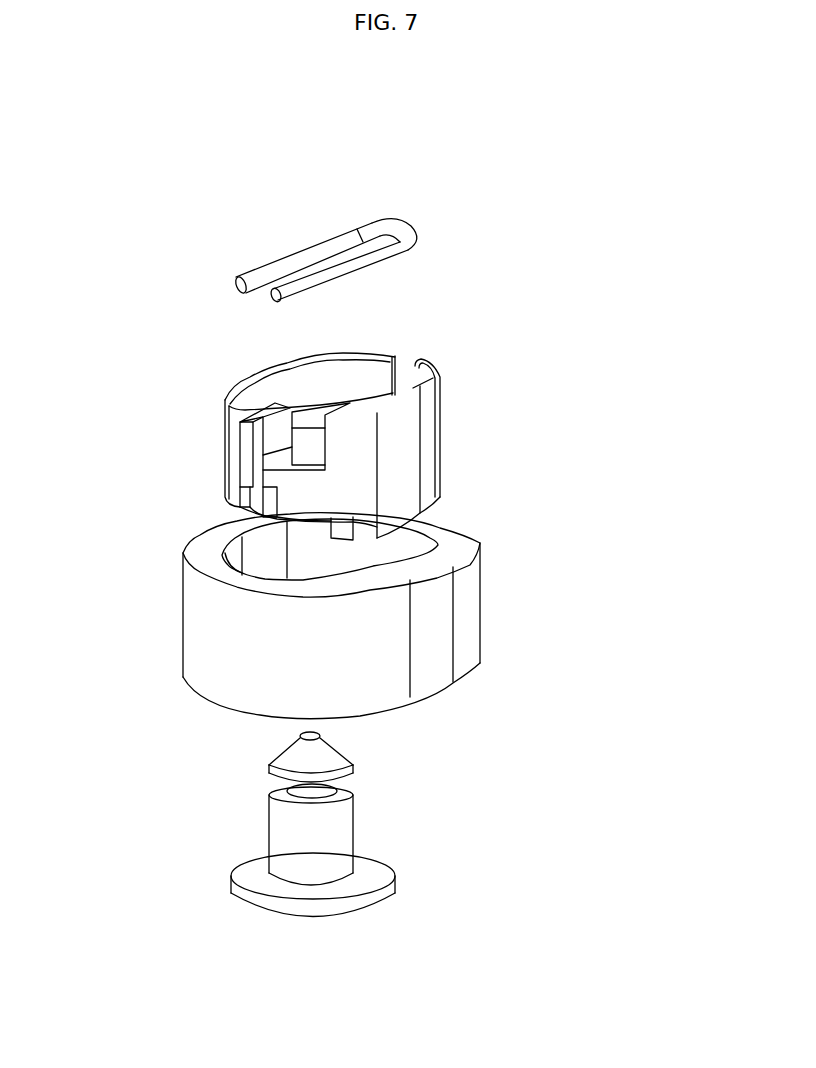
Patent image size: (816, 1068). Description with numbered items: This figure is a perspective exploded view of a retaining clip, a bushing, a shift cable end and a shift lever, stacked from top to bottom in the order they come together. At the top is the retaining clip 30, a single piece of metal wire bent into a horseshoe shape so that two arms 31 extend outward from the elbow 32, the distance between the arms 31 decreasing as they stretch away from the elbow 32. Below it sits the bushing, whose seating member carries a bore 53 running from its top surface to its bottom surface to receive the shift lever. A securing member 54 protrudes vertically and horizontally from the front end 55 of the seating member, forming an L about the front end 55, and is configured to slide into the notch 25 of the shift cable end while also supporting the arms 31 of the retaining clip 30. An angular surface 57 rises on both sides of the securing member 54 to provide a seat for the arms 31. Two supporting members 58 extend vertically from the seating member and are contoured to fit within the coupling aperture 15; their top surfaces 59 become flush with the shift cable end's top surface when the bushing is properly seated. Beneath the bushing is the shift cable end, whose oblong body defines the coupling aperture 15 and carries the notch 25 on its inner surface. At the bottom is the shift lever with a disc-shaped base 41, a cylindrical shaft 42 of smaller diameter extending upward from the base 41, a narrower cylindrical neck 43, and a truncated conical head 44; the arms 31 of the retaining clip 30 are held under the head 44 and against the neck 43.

The retaining clip 30 is at (419, 207).
The arms 31 is at (302, 246).
The elbow 32 is at (386, 228).
The supporting members 58 is at (310, 388).
The top surfaces 59 is at (236, 386).
The front end 55 is at (245, 413).
The securing member 54 is at (245, 450).
The bore 53 is at (310, 437).
The angular surface 57 is at (257, 470).
The notch 25 is at (184, 568).
The coupling aperture 15 is at (322, 562).
The head 44 is at (327, 757).
The neck 43 is at (337, 793).
The shaft 42 is at (302, 835).
The base 41 is at (253, 883).